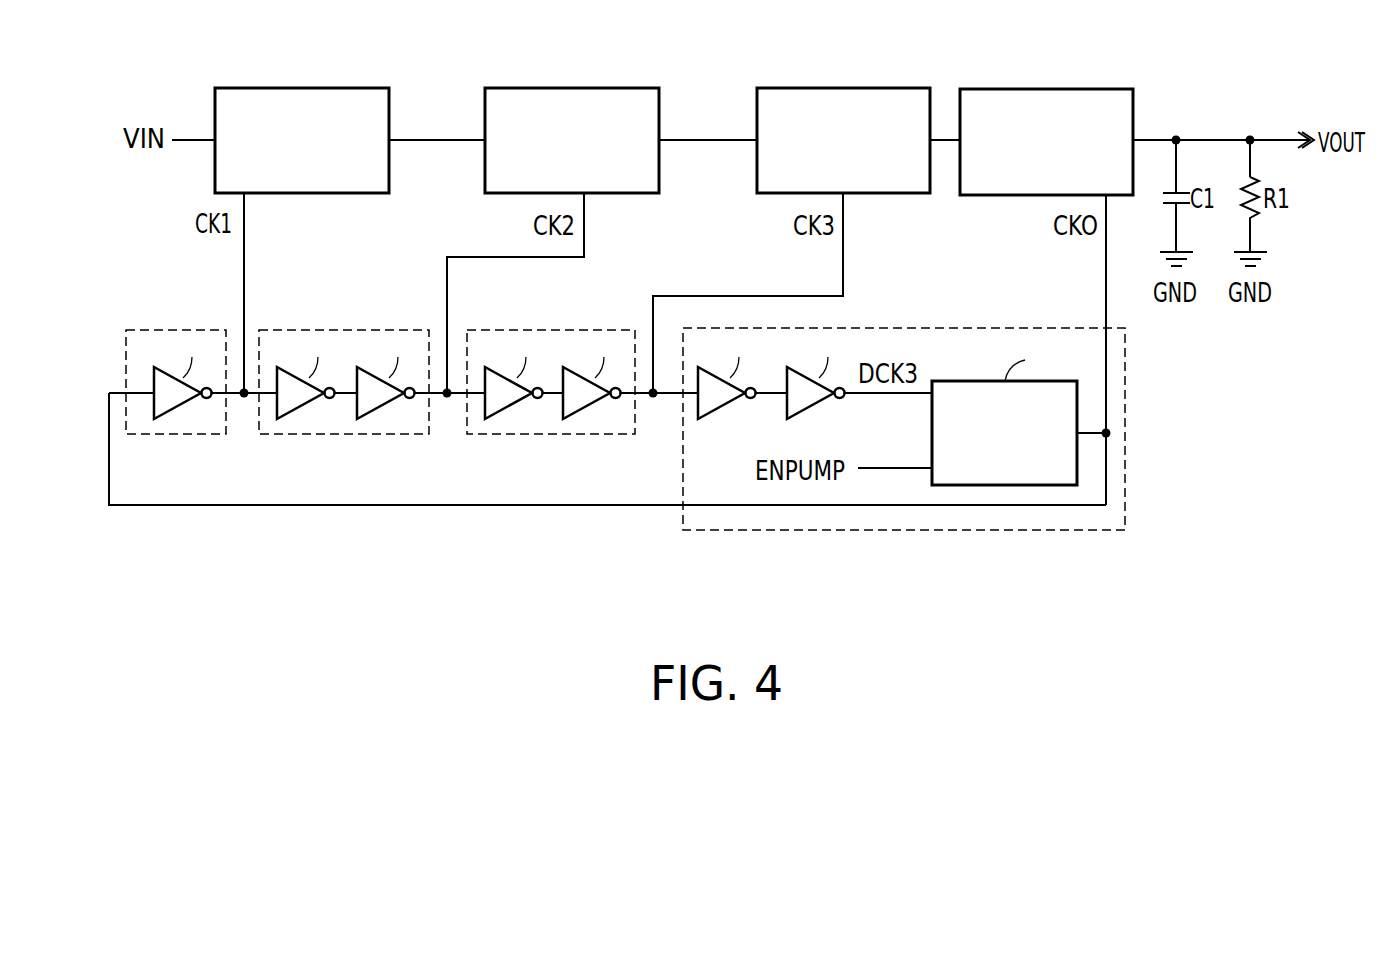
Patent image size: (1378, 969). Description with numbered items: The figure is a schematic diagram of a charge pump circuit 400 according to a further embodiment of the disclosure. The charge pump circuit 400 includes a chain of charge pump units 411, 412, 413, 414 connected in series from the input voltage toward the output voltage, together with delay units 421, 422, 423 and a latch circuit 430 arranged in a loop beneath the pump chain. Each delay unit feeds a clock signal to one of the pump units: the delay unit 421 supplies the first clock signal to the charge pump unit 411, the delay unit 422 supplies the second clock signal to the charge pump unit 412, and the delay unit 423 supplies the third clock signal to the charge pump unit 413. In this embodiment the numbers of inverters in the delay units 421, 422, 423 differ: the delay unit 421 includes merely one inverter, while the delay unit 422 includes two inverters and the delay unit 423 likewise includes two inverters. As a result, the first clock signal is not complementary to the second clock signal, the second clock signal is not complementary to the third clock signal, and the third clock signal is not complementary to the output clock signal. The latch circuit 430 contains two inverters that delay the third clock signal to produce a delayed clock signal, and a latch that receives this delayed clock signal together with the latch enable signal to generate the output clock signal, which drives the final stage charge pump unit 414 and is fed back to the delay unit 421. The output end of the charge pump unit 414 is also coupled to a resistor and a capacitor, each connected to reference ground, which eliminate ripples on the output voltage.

The charge pump circuit 400 is at (1255, 587).
The charge pump unit 411 is at (327, 88).
The charge pump unit 412 is at (597, 88).
The charge pump unit 413 is at (870, 88).
The charge pump unit 414 is at (1070, 89).
The delay unit 421 is at (169, 328).
The delay unit 422 is at (371, 328).
The delay unit 423 is at (581, 328).
The latch circuit 430 is at (1011, 328).